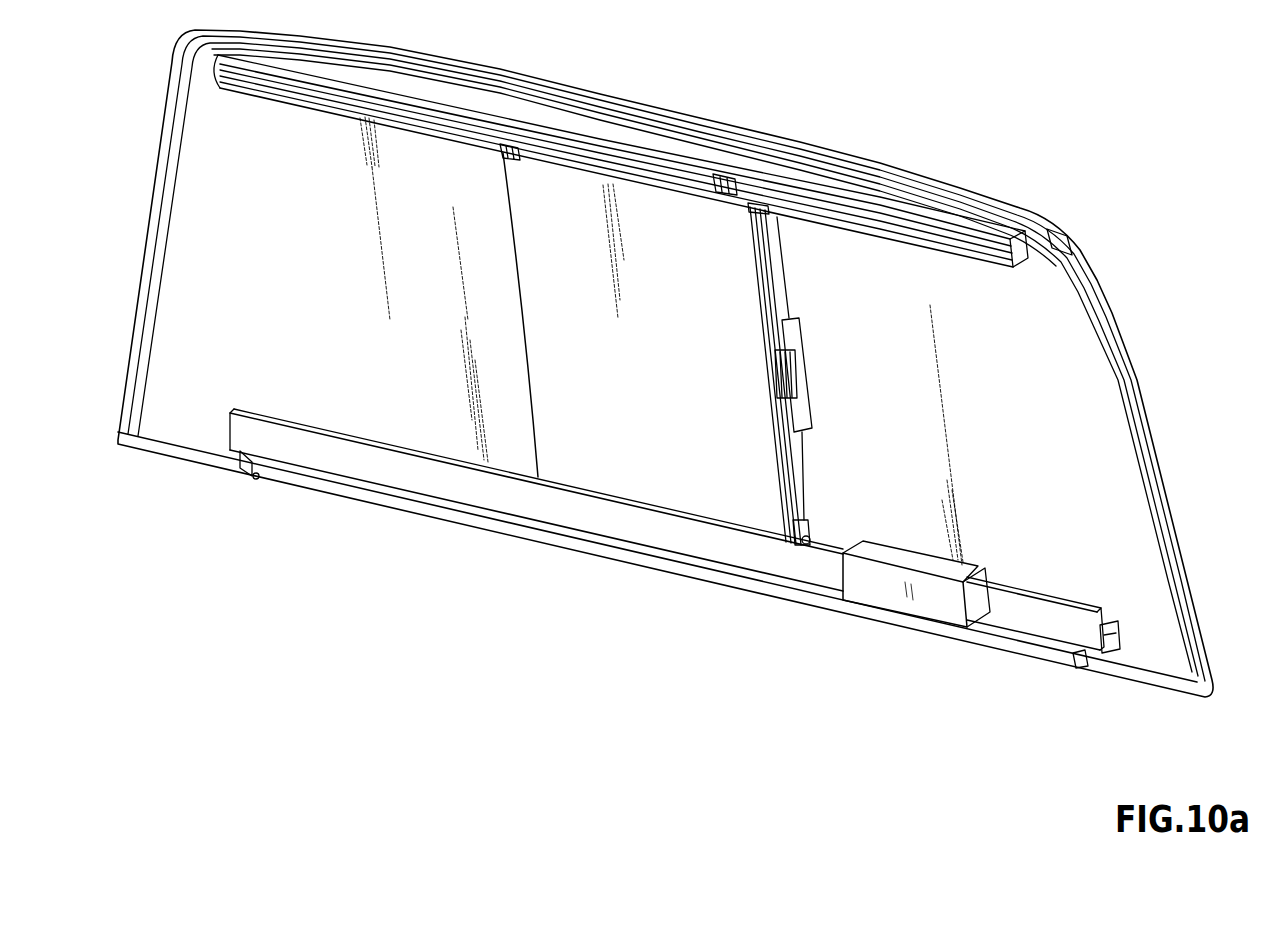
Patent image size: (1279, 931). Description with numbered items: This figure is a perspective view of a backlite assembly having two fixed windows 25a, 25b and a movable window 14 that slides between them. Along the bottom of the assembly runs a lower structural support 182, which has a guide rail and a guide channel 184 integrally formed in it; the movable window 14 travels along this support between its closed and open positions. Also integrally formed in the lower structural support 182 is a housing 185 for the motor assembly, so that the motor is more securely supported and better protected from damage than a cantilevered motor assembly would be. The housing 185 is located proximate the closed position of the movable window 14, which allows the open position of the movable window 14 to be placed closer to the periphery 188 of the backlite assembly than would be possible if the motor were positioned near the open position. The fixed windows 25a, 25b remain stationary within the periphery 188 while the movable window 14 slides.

The movable window 14 is at (655, 217).
The fixed window 25a is at (212, 207).
The fixed window 25b is at (1100, 411).
The lower structural support 182 is at (317, 457).
The guide channel 184 is at (427, 457).
The housing 185 is at (902, 595).
The periphery 188 is at (1112, 313).